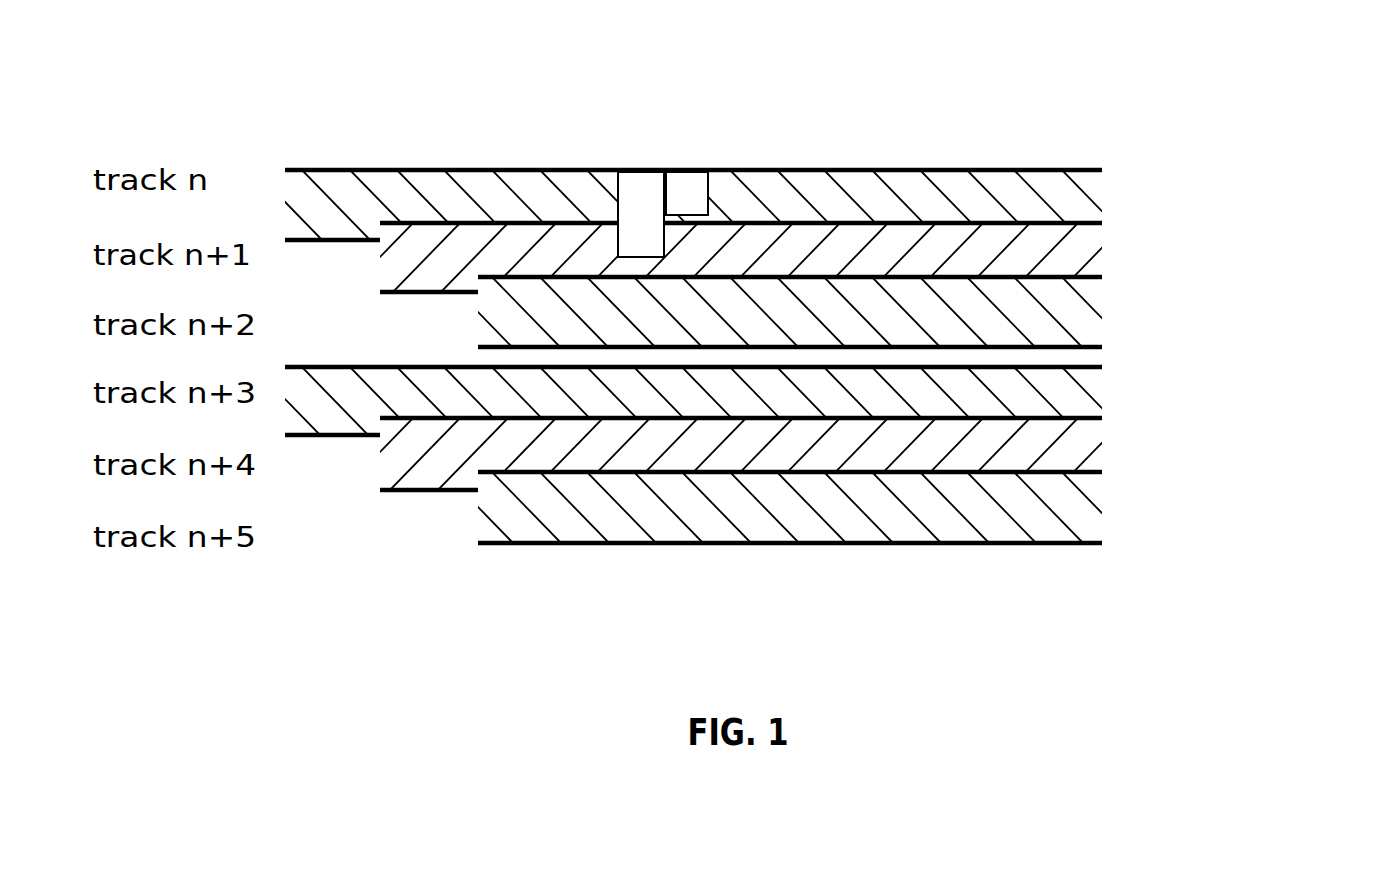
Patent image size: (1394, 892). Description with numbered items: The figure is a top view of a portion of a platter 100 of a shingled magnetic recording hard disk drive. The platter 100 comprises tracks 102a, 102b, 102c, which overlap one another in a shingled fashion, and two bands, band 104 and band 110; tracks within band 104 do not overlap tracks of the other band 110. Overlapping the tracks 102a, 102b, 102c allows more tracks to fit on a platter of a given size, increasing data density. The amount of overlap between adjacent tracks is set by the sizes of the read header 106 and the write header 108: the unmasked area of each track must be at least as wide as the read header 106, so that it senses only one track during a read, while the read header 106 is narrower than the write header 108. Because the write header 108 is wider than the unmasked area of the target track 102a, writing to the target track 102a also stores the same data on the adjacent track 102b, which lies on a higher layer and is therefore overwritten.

The platter 100 is at (697, 28).
The target track 102a is at (340, 183).
The adjacent track 102b is at (476, 222).
The track 102c is at (585, 265).
The band 104 is at (1160, 234).
The read header 106 is at (677, 187).
The write header 108 is at (640, 182).
The band 110 is at (1182, 426).